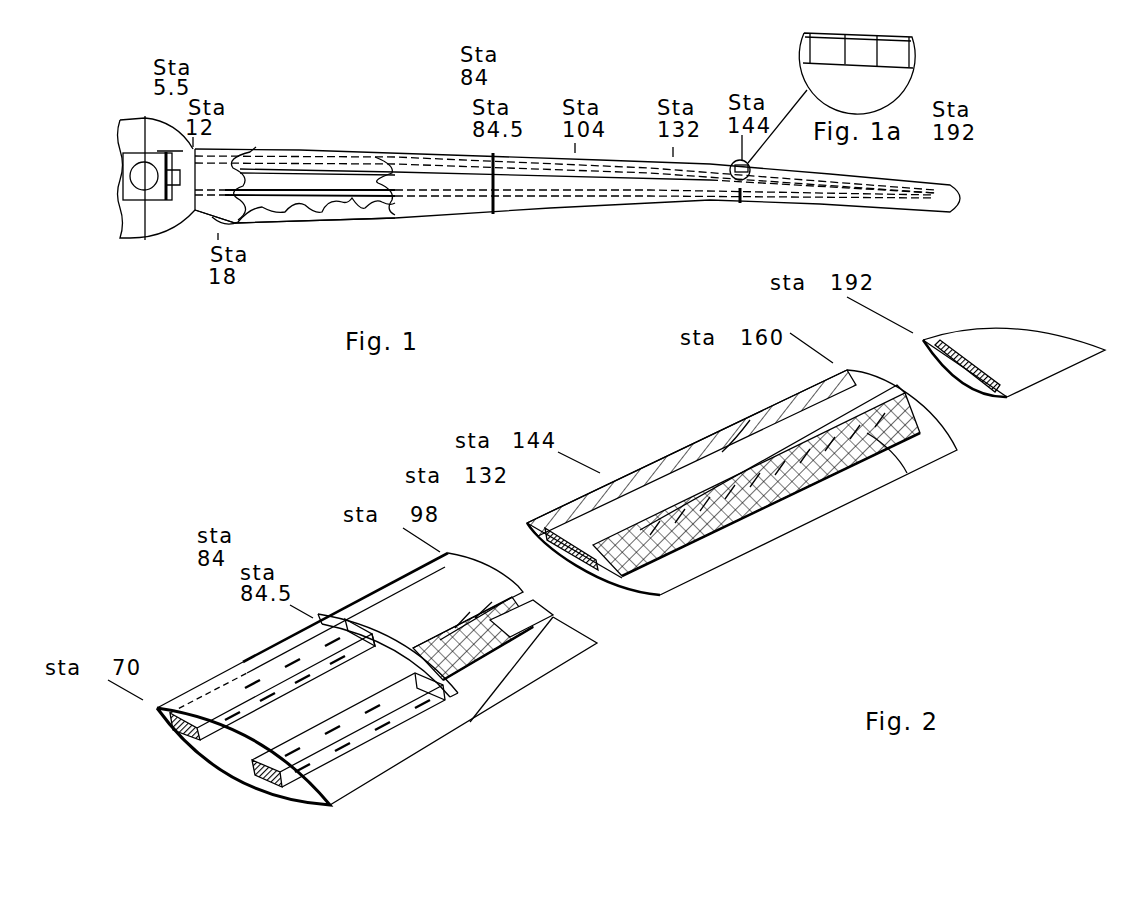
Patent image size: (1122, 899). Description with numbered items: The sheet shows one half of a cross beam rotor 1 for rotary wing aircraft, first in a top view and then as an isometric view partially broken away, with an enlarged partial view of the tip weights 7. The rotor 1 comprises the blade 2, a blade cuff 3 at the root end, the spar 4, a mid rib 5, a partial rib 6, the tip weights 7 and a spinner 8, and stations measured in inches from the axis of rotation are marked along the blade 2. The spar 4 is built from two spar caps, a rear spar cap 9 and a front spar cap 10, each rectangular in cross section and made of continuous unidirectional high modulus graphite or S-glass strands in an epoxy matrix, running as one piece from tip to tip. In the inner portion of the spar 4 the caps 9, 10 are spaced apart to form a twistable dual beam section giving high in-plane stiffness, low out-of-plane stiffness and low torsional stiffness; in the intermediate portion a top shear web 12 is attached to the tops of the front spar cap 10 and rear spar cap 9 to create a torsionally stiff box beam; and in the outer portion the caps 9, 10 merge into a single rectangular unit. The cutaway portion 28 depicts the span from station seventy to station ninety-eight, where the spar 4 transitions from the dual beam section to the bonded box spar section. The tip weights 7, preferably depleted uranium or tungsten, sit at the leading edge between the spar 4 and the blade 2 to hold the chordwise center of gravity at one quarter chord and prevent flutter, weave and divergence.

In FIG. 1, the cross beam rotor 1 is at (296, 140).
In FIG. 1, the blade 2 is at (350, 149).
In FIG. 1, the blade cuff 3 is at (168, 56).
In FIG. 1, the spar 4 is at (250, 160).
In FIG. 2, the spar 4 is at (172, 736).
In FIG. 1, the mid rib 5 is at (477, 45).
In FIG. 2, the mid rib 5 is at (470, 722).
In FIG. 1, the partial rib 6 is at (510, 85).
In FIG. 2, the partial rib 6 is at (323, 595).
In FIG. 1, the tip weights 7 is at (692, 88).
In FIG. 1A, the tip weights 7 is at (890, 50).
In FIG. 2, the tip weights 7 is at (682, 617).
In FIG. 1, the spinner 8 is at (143, 120).
In FIG. 2, the spinner 8 is at (897, 322).
In FIG. 1, the rear spar cap 9 is at (333, 198).
In FIG. 2, the rear spar cap 9 is at (387, 720).
In FIG. 1, the front spar cap 10 is at (312, 148).
In FIG. 2, the front spar cap 10 is at (313, 624).
In FIG. 2, the top shear web 12 is at (528, 648).
In FIG. 2, the portion 28 is at (195, 675).